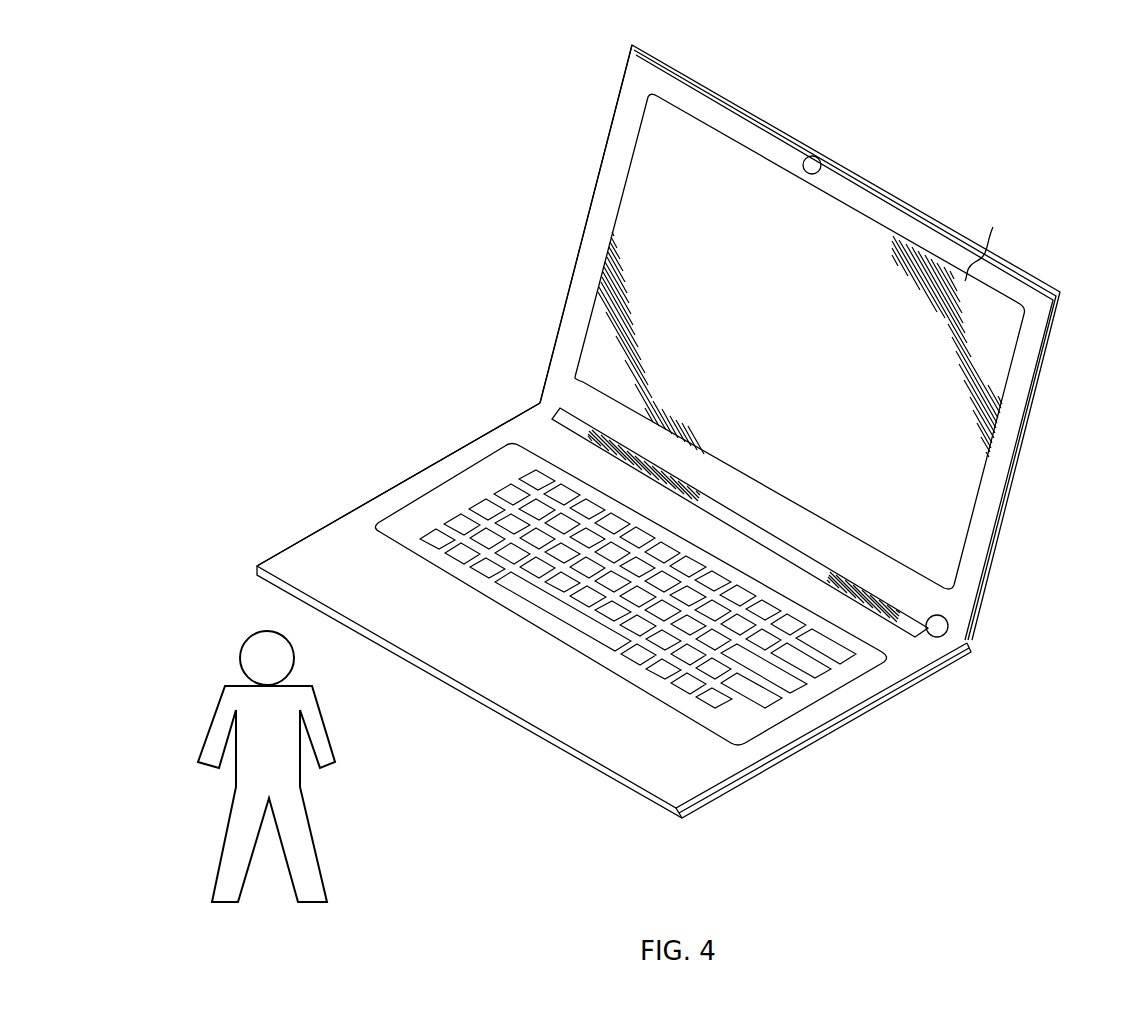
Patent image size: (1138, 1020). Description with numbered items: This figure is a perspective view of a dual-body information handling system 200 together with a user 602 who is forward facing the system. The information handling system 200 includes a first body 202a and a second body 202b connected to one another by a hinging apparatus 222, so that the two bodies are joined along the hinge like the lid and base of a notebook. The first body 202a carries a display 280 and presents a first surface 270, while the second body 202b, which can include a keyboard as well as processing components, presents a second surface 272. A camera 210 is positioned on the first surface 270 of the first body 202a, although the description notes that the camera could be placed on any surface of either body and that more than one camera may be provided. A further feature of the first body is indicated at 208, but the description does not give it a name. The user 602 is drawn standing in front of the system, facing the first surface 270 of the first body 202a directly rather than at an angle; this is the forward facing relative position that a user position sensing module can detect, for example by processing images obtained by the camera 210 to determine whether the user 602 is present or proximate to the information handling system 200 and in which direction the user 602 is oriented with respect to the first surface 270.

The information handling system 200 is at (681, 431).
The first body 202a is at (773, 342).
The second body 202b is at (614, 595).
The display 208 is at (806, 341).
The camera 210 is at (814, 155).
The hinging apparatus 222 is at (973, 633).
The first surface 270 is at (568, 307).
The second surface 272 is at (498, 427).
The display 280 is at (1001, 240).
The user 602 is at (227, 653).